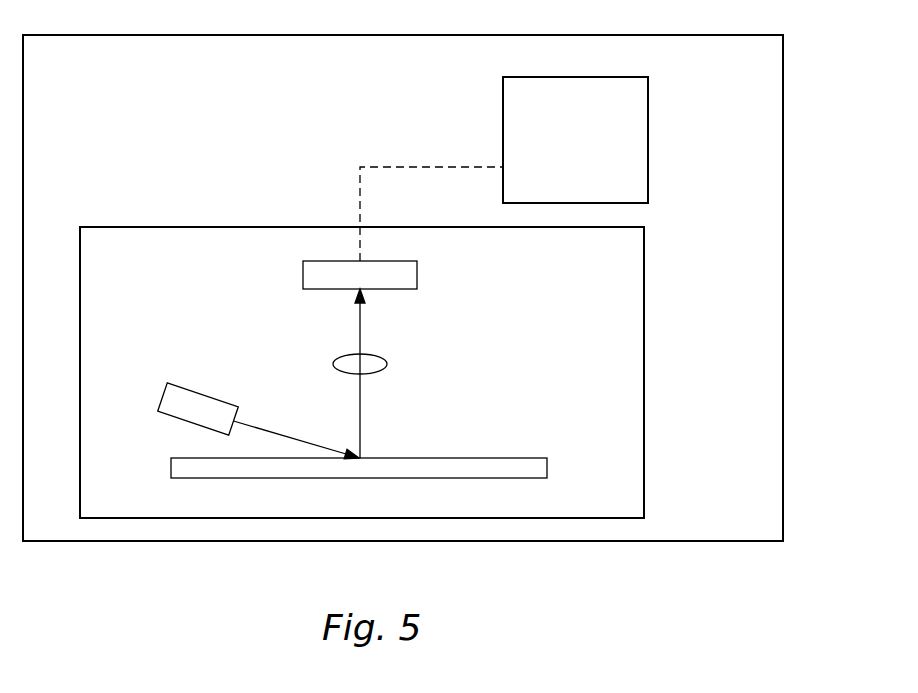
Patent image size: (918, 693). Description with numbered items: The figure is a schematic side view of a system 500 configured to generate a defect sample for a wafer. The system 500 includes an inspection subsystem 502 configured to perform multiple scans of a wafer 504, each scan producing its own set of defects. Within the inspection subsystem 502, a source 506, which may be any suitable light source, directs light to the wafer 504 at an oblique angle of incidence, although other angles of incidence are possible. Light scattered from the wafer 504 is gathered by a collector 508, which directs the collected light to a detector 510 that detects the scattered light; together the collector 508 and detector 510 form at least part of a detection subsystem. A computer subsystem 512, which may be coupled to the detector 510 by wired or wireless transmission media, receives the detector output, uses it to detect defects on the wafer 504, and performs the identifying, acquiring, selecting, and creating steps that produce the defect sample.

The system 500 is at (443, 288).
The inspection subsystem 502 is at (404, 372).
The wafer 504 is at (328, 453).
The source 506 is at (238, 410).
The collector 508 is at (325, 373).
The detector 510 is at (322, 270).
The computer subsystem 512 is at (504, 169).